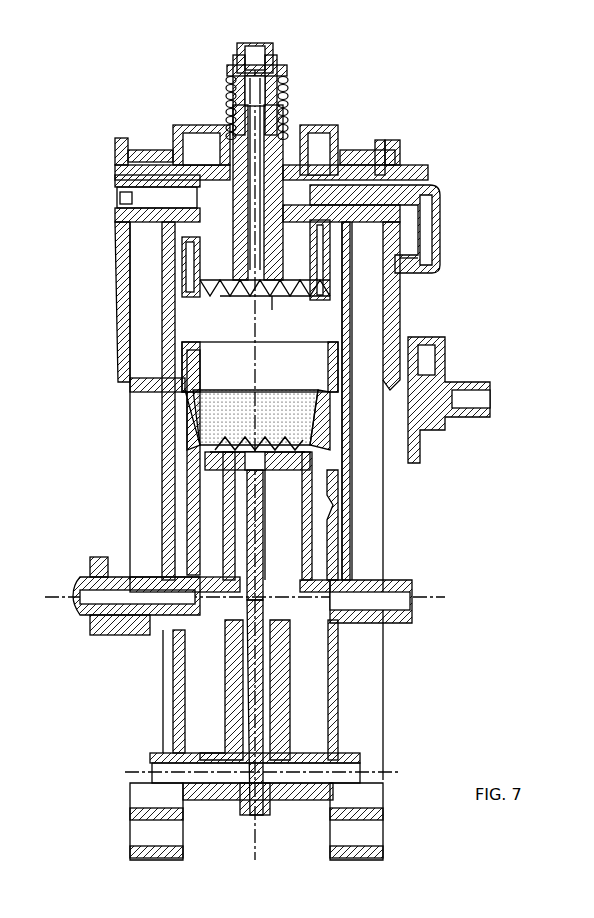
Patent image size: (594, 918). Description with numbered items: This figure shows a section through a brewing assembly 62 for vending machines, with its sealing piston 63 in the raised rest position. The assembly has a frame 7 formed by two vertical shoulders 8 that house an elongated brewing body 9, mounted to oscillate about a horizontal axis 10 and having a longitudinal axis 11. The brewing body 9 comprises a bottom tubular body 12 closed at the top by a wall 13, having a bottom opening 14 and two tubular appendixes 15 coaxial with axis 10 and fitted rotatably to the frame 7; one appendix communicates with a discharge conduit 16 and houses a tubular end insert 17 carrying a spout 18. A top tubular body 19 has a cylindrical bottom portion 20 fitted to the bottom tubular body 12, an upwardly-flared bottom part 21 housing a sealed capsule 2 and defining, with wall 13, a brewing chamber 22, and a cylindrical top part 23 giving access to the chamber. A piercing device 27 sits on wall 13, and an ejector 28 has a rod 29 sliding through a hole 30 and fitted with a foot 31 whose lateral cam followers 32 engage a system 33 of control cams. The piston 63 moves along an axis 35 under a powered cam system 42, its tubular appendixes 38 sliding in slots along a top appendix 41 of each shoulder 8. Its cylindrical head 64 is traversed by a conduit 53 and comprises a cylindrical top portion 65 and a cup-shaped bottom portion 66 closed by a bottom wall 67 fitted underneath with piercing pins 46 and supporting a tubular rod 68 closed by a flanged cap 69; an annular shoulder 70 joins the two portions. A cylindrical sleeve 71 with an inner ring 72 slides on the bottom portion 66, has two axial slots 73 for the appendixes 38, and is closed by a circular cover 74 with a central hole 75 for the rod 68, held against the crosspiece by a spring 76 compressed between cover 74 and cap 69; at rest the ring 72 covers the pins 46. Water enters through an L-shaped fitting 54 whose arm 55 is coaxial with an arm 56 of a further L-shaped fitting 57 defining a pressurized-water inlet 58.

The sealed capsule 2 is at (222, 420).
The frame 7 is at (160, 482).
The vertical shoulder 8 is at (336, 462).
The brewing body 9 is at (332, 423).
The horizontal axis 10 is at (420, 590).
The longitudinal axis 11 is at (262, 840).
The bottom tubular body 12 is at (185, 630).
The wall 13 is at (282, 475).
The bottom opening 14 is at (295, 625).
The tubular appendix 15 is at (380, 580).
The discharge conduit 16 is at (165, 620).
The tubular end insert 17 is at (95, 628).
The spout 18 is at (78, 585).
The top tubular body 19 is at (182, 463).
The cylindrical bottom portion 20 is at (320, 540).
The upwardly-flared bottom part 21 is at (192, 438).
The brewing chamber 22 is at (290, 425).
The cylindrical top part 23 is at (180, 358).
The piercing device 27 is at (340, 470).
The ejector 28 is at (305, 690).
The rod 29 is at (262, 535).
The hole 30 is at (250, 475).
The foot 31 is at (285, 740).
The lateral cam follower 32 is at (225, 795).
The system of control cams 33 is at (345, 778).
The axis 35 is at (292, 86).
The tubular appendix 38 is at (395, 140).
The top appendix 41 is at (362, 300).
The powered cam system 42 is at (360, 835).
The piercing pins 46 is at (258, 345).
The conduit 53 is at (270, 298).
The L-shaped fitting 54 is at (452, 185).
The arm 55 is at (442, 248).
The arm 56 is at (438, 355).
The further L-shaped fitting 57 is at (460, 368).
The pressurized-water inlet 58 is at (470, 398).
The brewing assembly 62 is at (458, 122).
The sealing piston 63 is at (345, 115).
The cylindrical head 64 is at (324, 258).
The cylindrical top portion 65 is at (200, 228).
The cup-shaped bottom portion 66 is at (230, 300).
The bottom wall 67 is at (238, 288).
The tubular rod 68 is at (238, 205).
The flanged cap 69 is at (275, 55).
The annular shoulder 70 is at (200, 252).
The cylindrical sleeve 71 is at (178, 282).
The inner ring 72 is at (190, 297).
The axial slot 73 is at (298, 150).
The circular cover 74 is at (340, 140).
The central hole 75 is at (258, 170).
The spring 76 is at (228, 108).